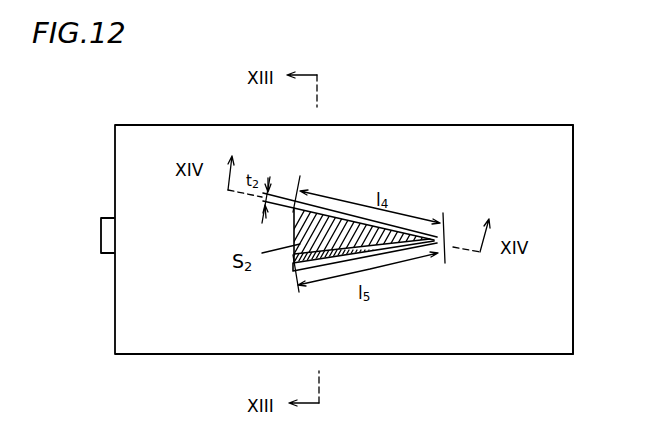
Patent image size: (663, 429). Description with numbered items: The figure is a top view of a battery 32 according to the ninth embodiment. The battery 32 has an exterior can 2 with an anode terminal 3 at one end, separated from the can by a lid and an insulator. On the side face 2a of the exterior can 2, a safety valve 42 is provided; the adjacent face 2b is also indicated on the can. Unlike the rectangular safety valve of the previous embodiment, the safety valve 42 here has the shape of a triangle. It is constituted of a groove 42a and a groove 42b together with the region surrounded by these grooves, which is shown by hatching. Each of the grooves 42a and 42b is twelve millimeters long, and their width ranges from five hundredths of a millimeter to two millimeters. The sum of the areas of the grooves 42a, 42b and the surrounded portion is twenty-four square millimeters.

The exterior can 2 is at (590, 70).
The side face of the exterior can 2a is at (523, 152).
The substrate side surface 2b is at (573, 146).
The anode terminal 3 is at (101, 226).
The battery 32 is at (394, 82).
The safety valve 42 is at (374, 181).
The groove 42a is at (337, 203).
The groove 42b is at (378, 248).